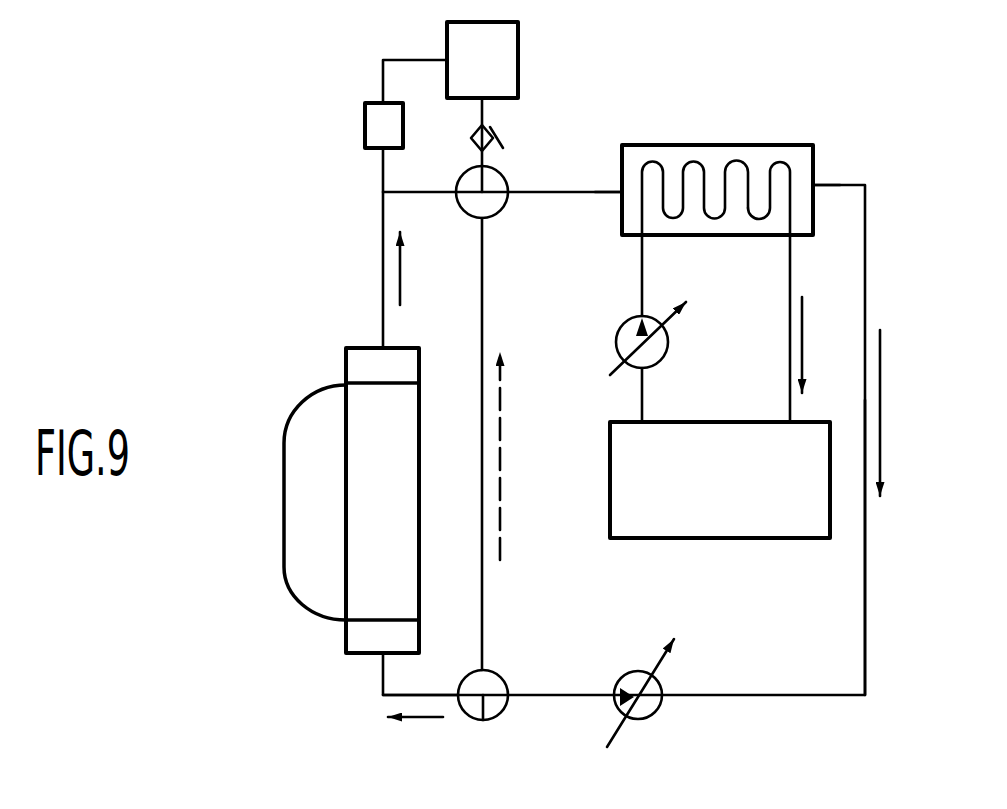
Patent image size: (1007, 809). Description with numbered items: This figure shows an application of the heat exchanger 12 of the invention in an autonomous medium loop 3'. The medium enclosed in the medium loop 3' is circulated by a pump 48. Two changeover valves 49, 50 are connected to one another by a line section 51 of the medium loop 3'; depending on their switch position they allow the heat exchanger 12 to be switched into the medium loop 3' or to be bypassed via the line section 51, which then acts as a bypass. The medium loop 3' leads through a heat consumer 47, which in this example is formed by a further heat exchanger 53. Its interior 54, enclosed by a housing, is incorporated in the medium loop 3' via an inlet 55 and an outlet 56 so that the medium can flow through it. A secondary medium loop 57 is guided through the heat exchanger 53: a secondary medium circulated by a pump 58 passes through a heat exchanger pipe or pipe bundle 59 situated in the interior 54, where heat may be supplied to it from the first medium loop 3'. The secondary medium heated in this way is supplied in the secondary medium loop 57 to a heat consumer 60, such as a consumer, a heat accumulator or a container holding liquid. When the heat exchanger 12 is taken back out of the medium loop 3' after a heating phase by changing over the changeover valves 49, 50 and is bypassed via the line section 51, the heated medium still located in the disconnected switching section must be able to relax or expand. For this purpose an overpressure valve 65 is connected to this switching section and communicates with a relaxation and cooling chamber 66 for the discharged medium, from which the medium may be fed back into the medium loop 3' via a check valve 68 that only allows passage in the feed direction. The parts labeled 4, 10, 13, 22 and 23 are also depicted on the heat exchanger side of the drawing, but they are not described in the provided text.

The medium loop 3' is at (896, 512).
The housing 4 is at (286, 432).
The reactor vessel 10 is at (402, 495).
The heat exchanger 12 is at (338, 645).
The upper end portion 13 is at (352, 370).
The outlet line 22 is at (380, 675).
The inlet line 23 is at (383, 268).
The heat consumer 47 is at (742, 140).
The pump 48 is at (660, 720).
The changeover valve 49 is at (497, 712).
The changeover valve 50 is at (492, 208).
The line section 51 is at (482, 603).
The further heat exchanger 53 is at (741, 235).
The interior 54 is at (672, 165).
The inlet 55 is at (622, 190).
The outlet 56 is at (815, 182).
The secondary medium loop 57 is at (638, 278).
The pump 58 is at (665, 356).
The heat exchanger pipe or pipe bundle 59 is at (755, 165).
The heat consumer 60 is at (739, 495).
The overpressure valve 65 is at (365, 122).
The relaxation and cooling chamber 66 is at (488, 55).
The check valve 68 is at (460, 146).